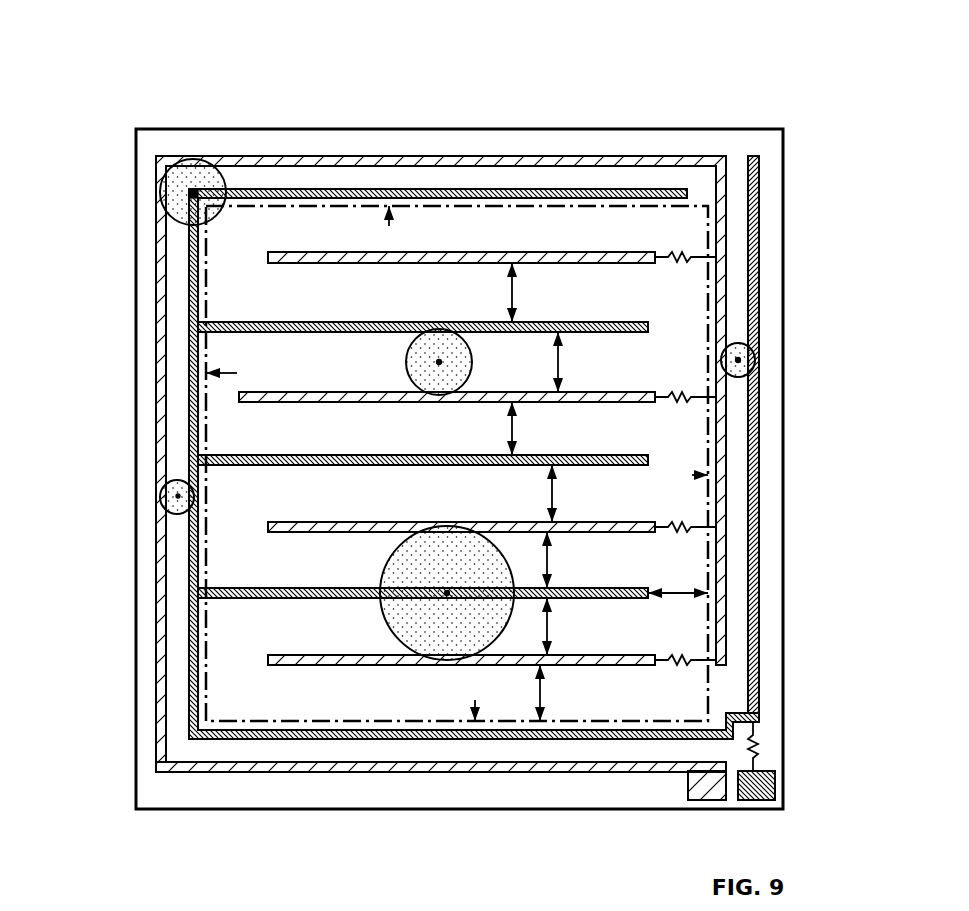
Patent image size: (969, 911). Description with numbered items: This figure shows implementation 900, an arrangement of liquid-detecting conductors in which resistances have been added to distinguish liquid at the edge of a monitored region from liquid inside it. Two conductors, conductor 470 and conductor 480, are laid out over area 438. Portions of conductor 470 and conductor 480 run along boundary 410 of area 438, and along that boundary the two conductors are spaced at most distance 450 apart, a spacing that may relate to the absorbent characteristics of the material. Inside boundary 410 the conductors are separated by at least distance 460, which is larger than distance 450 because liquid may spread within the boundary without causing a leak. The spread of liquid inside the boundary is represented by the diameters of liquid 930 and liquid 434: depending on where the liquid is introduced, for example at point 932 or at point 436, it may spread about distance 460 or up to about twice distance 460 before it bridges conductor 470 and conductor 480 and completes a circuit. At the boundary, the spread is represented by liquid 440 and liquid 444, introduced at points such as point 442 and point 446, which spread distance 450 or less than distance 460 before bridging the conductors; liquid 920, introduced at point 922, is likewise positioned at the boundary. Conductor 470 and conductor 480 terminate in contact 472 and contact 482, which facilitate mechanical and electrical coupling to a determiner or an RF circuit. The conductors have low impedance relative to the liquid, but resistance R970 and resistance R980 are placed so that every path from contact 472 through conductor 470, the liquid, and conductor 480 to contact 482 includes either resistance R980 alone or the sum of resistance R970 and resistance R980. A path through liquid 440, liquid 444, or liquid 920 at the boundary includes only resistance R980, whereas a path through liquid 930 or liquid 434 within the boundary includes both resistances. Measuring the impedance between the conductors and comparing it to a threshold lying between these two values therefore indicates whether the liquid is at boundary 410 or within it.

The implementation 900 is at (118, 12).
The area 438 is at (622, 129).
The distance 450 is at (389, 156).
The conductor 470 is at (357, 773).
The liquid introduction point 446 is at (168, 208).
The liquid 444 is at (165, 178).
The boundary 410 is at (507, 205).
The conductor 480 is at (760, 565).
The resistance R970 is at (683, 472).
The distance 460 is at (513, 297).
The liquid 930 is at (408, 370).
The liquid introduction point 932 is at (439, 362).
The liquid 434 is at (382, 620).
The liquid introduction point 436 is at (447, 593).
The liquid 440 is at (172, 505).
The liquid introduction point 442 is at (178, 495).
The liquid 920 is at (746, 378).
The liquid introduction point 922 is at (738, 360).
The resistance R980 is at (760, 745).
The contact 472 is at (690, 780).
The contact 482 is at (770, 800).